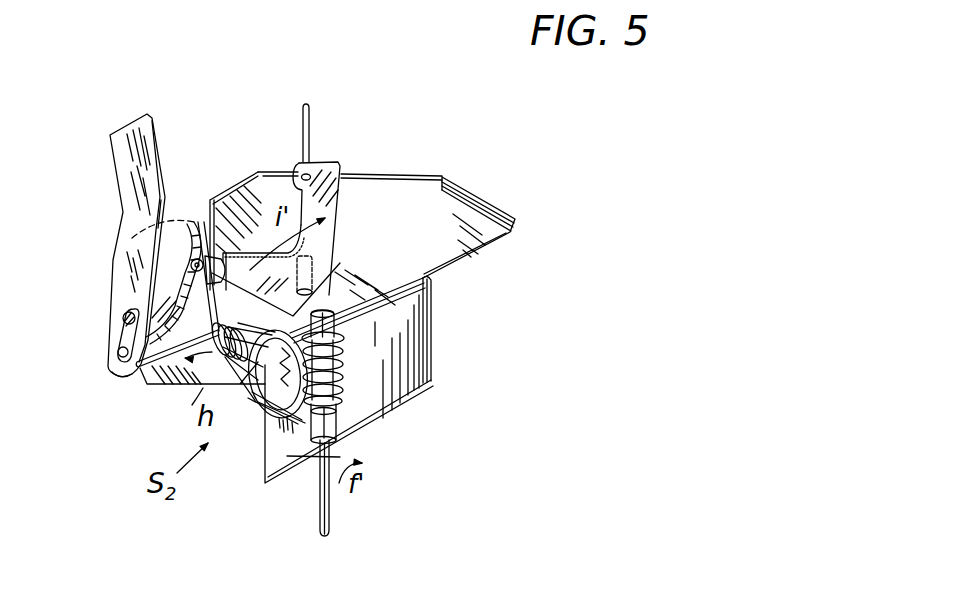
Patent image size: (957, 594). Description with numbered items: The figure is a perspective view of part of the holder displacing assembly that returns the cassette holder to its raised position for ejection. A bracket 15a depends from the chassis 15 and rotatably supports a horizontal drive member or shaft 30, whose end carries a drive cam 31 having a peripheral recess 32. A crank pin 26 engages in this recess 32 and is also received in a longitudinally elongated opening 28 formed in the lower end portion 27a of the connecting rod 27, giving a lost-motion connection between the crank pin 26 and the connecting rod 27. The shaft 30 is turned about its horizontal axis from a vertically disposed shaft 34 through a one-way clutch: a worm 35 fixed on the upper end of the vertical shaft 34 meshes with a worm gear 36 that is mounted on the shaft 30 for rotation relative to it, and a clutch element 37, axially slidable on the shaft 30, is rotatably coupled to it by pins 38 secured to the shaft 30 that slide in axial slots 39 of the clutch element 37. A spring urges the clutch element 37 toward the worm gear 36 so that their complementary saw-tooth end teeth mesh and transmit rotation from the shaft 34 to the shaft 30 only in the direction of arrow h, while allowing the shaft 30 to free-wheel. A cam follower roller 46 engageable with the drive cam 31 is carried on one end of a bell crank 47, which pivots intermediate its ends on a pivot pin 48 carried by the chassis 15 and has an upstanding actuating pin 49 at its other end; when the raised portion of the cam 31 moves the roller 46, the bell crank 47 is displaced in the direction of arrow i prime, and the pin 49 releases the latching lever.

The chassis 15 is at (452, 177).
The bracket 15a is at (264, 164).
The crank pin 26 is at (124, 311).
The connecting rod 27 is at (133, 175).
The lower end portion 27a is at (110, 373).
The longitudinally elongated opening 28 is at (119, 342).
The rotatable drive member or shaft 30 is at (132, 260).
The drive cam 31 is at (176, 228).
The peripheral recess 32 is at (160, 387).
The vertically disposed shaft 34 is at (322, 500).
The worm 35 is at (338, 367).
The worm gear 36 is at (295, 427).
The clutch element 37 is at (337, 326).
The pins 38 is at (222, 295).
The axial slots 39 is at (247, 387).
The cam follower roller 46 is at (211, 265).
The bell crank 47 is at (323, 238).
The pivot pin 48 is at (333, 287).
The upstanding actuating pin 49 is at (312, 124).